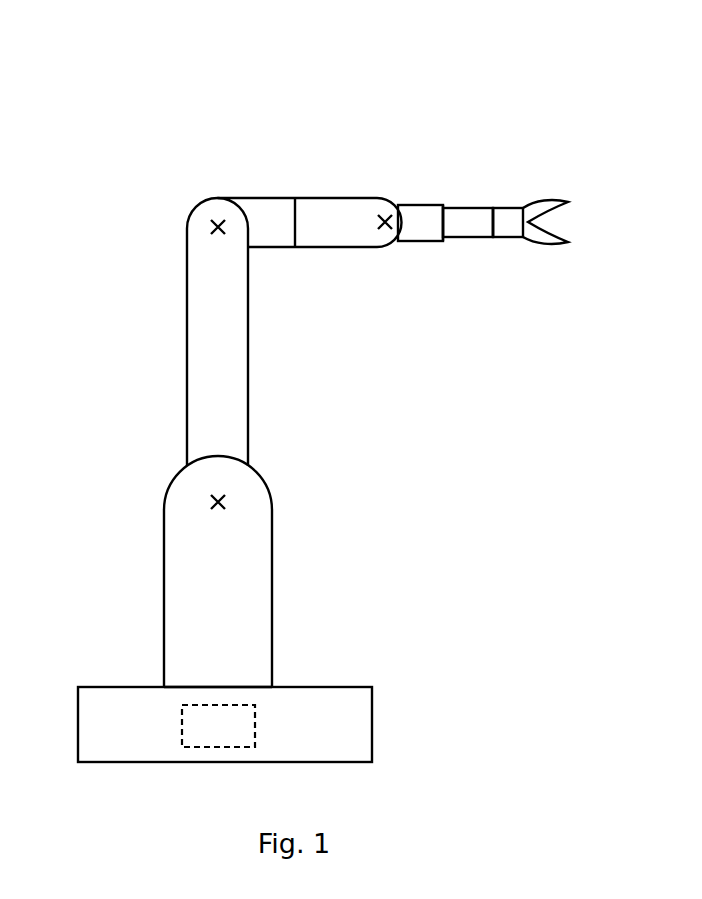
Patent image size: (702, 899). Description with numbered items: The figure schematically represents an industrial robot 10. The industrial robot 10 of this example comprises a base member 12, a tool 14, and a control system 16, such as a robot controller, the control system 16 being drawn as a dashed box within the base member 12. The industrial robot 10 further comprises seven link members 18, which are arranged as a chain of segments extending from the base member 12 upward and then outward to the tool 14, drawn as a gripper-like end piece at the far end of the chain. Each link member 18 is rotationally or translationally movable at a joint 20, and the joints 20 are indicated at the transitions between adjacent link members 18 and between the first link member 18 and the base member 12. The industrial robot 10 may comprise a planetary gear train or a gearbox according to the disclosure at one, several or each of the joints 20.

The industrial robot 10 is at (86, 74).
The base member 12 is at (350, 723).
The tool 14 is at (552, 200).
The control system 16 is at (205, 739).
The link member 18 is at (270, 225).
The joint 20 is at (210, 224).